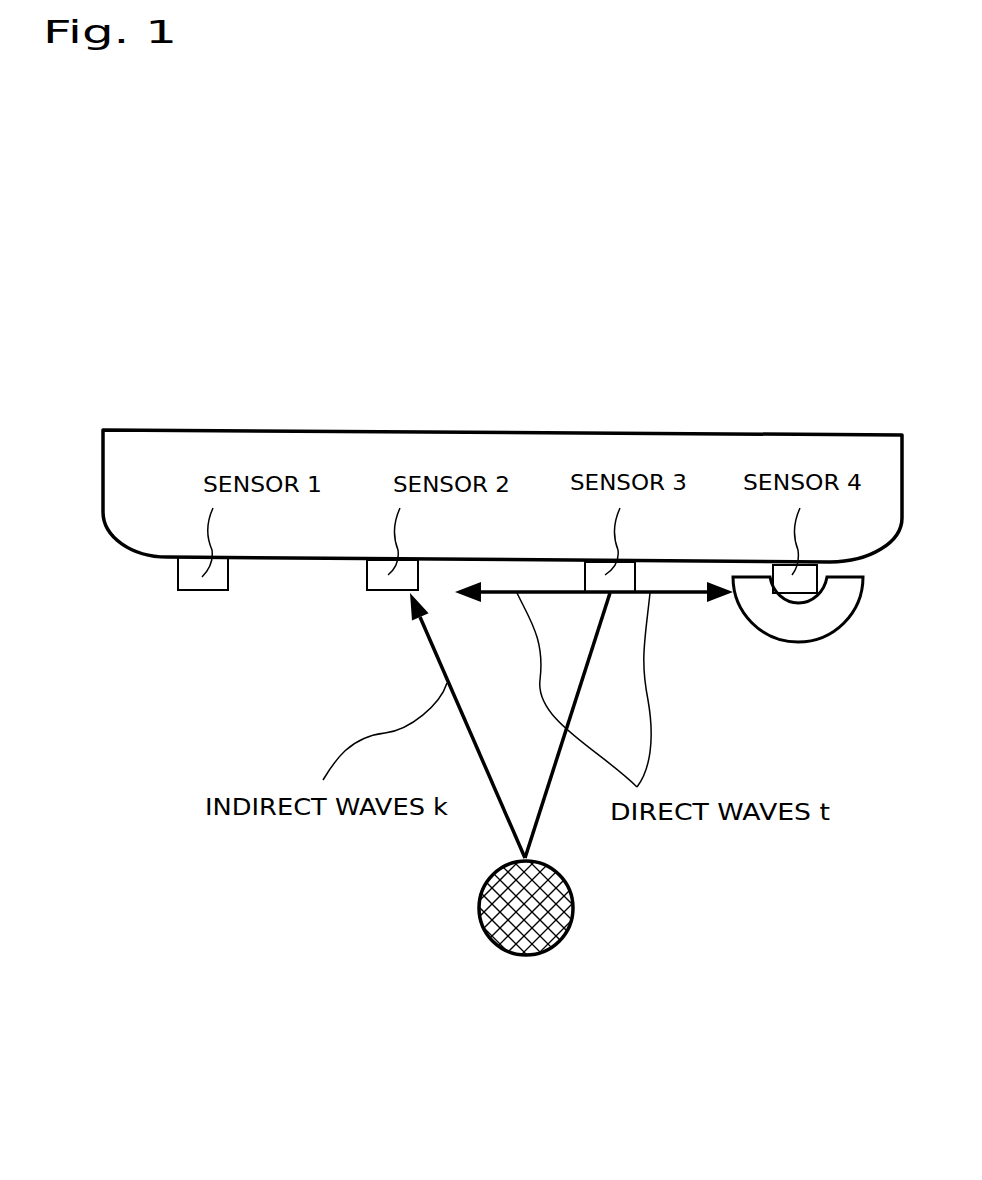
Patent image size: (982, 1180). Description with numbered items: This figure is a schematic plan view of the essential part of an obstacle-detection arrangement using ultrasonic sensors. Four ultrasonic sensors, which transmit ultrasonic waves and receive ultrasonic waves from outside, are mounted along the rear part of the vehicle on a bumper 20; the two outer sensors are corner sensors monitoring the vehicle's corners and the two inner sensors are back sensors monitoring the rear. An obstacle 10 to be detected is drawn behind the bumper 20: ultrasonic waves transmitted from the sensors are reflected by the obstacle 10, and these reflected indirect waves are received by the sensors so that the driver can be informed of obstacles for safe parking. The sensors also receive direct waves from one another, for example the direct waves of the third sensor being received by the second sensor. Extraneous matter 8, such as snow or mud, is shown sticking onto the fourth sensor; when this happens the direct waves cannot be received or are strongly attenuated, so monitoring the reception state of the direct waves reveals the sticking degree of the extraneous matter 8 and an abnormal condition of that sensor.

The bumper 20 is at (157, 430).
The extraneous matter 8 is at (772, 638).
The obstacle 10 is at (570, 927).